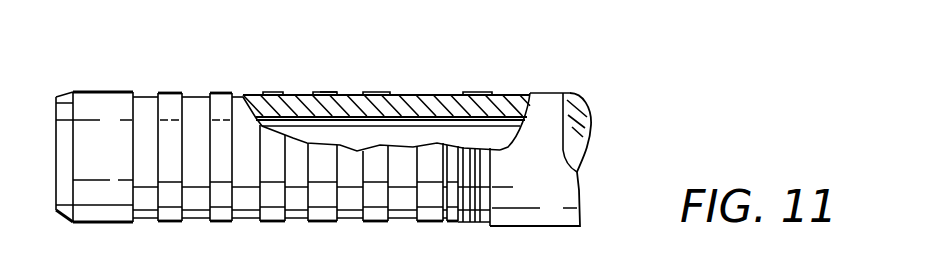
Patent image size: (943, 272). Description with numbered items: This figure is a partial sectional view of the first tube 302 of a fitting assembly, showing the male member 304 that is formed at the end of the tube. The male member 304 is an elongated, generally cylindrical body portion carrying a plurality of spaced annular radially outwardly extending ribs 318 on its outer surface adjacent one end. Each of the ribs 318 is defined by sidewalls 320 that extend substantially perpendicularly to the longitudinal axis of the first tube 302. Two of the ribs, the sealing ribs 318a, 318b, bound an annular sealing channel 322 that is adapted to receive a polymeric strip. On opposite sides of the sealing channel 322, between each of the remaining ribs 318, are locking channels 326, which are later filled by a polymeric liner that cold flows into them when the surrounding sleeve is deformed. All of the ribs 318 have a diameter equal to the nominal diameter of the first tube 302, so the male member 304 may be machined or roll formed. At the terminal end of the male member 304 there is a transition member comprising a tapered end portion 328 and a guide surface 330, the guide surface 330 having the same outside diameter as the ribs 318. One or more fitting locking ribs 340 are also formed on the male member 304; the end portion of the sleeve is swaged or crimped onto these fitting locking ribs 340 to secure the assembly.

The first tube 302 is at (563, 93).
The male member 304 is at (323, 225).
The ribs 318 is at (213, 93).
The sealing rib 318a is at (270, 93).
The sealing rib 318b is at (328, 93).
The sidewalls 320 is at (397, 93).
The annular sealing channel 322 is at (295, 93).
The locking channels 326 is at (348, 95).
The tapered end portion 328 is at (55, 215).
The guide surface 330 is at (102, 127).
The fitting locking ribs 340 is at (467, 93).